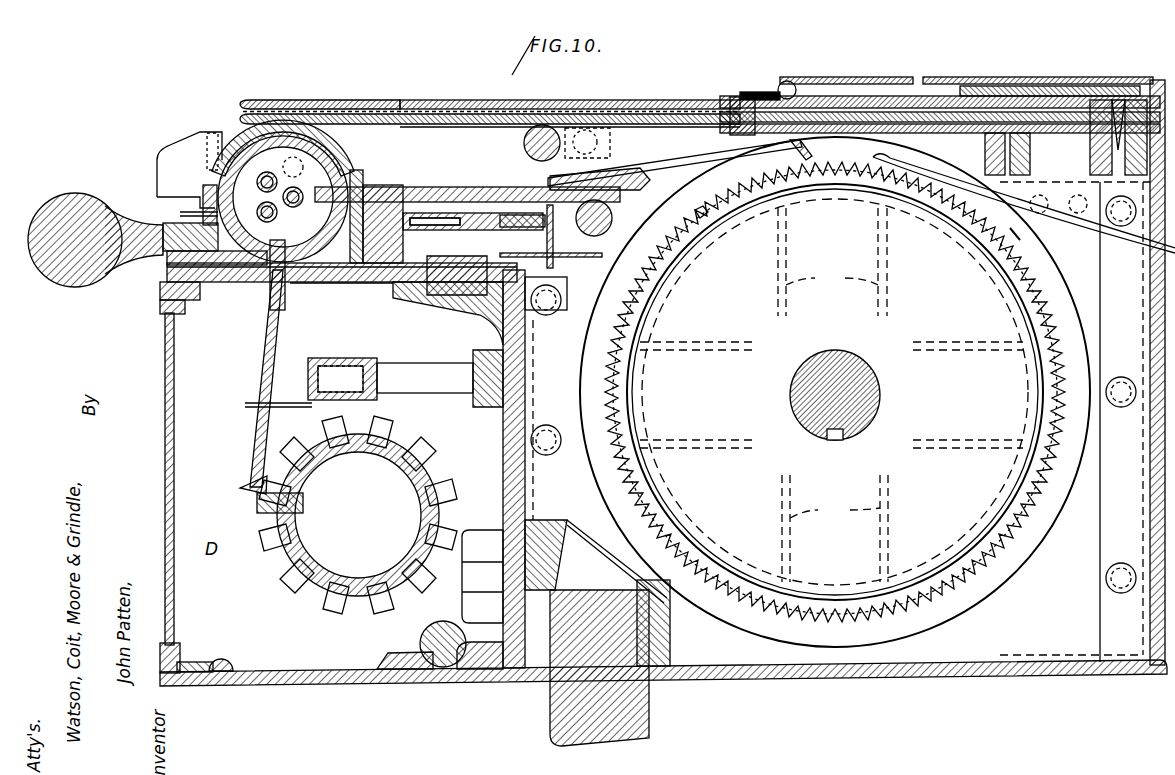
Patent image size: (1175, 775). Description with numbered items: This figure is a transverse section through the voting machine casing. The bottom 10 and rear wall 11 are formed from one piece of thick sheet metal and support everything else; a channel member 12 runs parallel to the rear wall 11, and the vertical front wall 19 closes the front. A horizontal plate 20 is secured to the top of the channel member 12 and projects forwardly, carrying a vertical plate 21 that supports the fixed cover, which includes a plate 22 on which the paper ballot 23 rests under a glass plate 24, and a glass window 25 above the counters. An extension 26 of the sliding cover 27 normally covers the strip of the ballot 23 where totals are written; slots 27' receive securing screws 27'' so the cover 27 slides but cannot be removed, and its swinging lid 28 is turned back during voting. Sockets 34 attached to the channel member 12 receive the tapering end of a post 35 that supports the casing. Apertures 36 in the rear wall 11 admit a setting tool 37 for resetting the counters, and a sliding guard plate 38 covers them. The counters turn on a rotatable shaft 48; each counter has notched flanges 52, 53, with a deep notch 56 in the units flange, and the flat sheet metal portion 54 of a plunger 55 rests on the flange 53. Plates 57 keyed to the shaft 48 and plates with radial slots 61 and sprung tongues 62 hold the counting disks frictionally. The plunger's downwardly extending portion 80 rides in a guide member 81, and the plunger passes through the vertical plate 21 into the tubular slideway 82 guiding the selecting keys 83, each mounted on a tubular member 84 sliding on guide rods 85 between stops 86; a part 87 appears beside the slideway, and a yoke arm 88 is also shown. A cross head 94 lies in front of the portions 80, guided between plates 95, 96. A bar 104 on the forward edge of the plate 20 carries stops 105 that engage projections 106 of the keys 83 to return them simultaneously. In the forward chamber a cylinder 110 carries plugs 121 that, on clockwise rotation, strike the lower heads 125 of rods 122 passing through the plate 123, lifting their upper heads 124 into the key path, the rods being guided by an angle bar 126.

The bottom 10 is at (748, 676).
The rear wall 11 is at (1152, 470).
The channel member 12 is at (503, 428).
The front wall 19 is at (165, 398).
The horizontal plate 20 is at (368, 283).
The vertical plate 21 is at (348, 112).
The plate 22 is at (450, 104).
The paper ballot 23 is at (635, 106).
The glass plate 24 is at (548, 106).
The glass window 25 is at (866, 108).
The extension 26 is at (745, 96).
The sliding cover 27 is at (940, 89).
The slots 27' is at (1050, 110).
The securing screws 27'' is at (1118, 112).
The swinging lid 28 is at (1075, 80).
The sockets 34 is at (672, 638).
The post 35 is at (550, 698).
The apertures 36 is at (1145, 238).
The setting tool 37 is at (1088, 240).
The sliding guard plate 38 is at (1143, 172).
The rotatable shaft 48 is at (856, 372).
The flange 52 is at (1015, 240).
The flange 53 is at (1000, 222).
The flat sheet metal portion 54 is at (785, 155).
The plunger 55 is at (660, 172).
The notch 56 is at (700, 212).
The plates 57 is at (662, 228).
The slots 61 is at (831, 395).
The tongues 62 is at (830, 192).
The downwardly extending portion 80 is at (553, 244).
The guide member 81 is at (578, 258).
The tubular slideway 82 is at (262, 140).
The selecting keys 83 is at (70, 210).
The tubular member 84 is at (260, 210).
The guide rods 85 is at (257, 183).
The stops 86 is at (290, 132).
The lug 87 is at (208, 145).
The arm 88 is at (172, 178).
The cross head 94 is at (482, 214).
The plate 95 is at (418, 212).
The plate 96 is at (445, 216).
The bar 104 is at (182, 258).
The stops 105 is at (180, 212).
The projections 106 is at (192, 200).
The cylinder 110 is at (428, 472).
The plugs 121 is at (325, 590).
The rods 122 is at (262, 357).
The plate 123 is at (295, 278).
The head 124 is at (285, 245).
The head 125 is at (245, 487).
The angle bar 126 is at (298, 405).